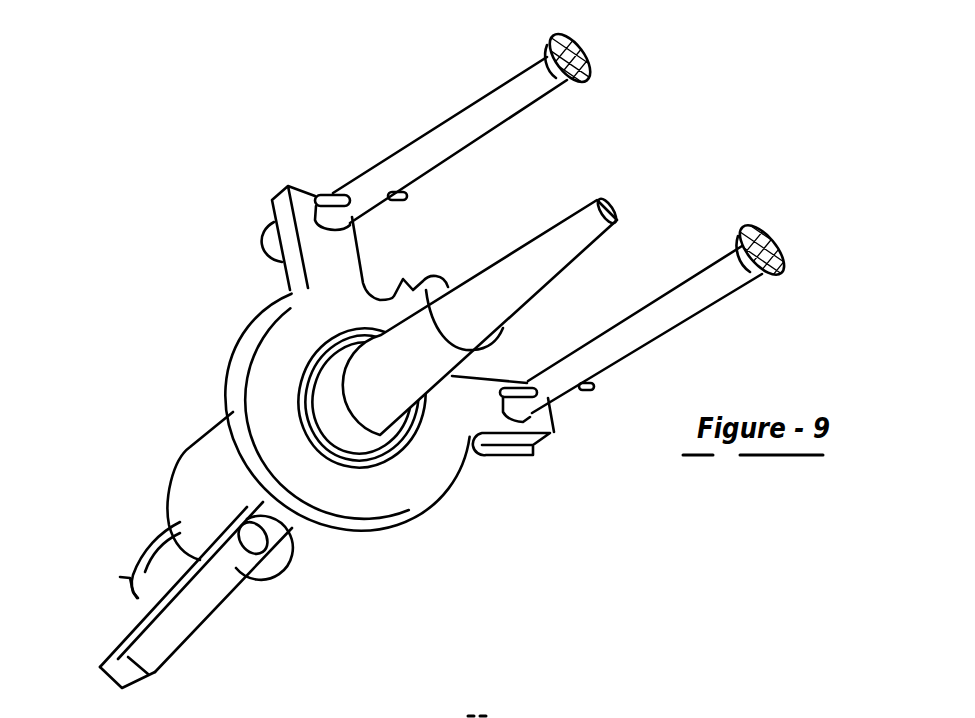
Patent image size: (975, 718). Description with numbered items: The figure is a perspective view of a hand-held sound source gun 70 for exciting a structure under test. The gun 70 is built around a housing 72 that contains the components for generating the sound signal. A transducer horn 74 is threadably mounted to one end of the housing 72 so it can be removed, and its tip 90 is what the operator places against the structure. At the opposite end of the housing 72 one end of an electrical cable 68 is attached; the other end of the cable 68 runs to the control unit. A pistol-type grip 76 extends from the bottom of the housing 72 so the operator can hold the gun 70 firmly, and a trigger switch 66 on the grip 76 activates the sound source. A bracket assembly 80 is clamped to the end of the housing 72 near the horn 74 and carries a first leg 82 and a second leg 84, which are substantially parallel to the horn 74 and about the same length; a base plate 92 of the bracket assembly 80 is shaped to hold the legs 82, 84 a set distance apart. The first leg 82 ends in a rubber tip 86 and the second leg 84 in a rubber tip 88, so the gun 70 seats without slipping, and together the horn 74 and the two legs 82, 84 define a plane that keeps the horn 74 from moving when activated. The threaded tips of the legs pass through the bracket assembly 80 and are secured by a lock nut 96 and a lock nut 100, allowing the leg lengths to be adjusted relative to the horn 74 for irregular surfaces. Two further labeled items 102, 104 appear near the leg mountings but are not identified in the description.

The hand-held sound source gun 70 is at (741, 67).
The housing 72 is at (203, 452).
The bracket assembly 80 is at (396, 523).
The base plate 92 is at (270, 350).
The transducer horn 74 is at (505, 258).
The tip 90 is at (613, 209).
The lock nut 100 is at (272, 232).
The retaining clips 104 is at (397, 200).
The second leg 84 is at (392, 158).
The rubber tip 88 is at (594, 46).
The first leg 82 is at (660, 332).
The rubber tip 86 is at (778, 241).
The retaining clip 102 is at (583, 392).
The lock nut 96 is at (500, 455).
The pistol-type grip 76 is at (197, 610).
The trigger switch 66 is at (283, 532).
The electrical cable 68 is at (149, 550).